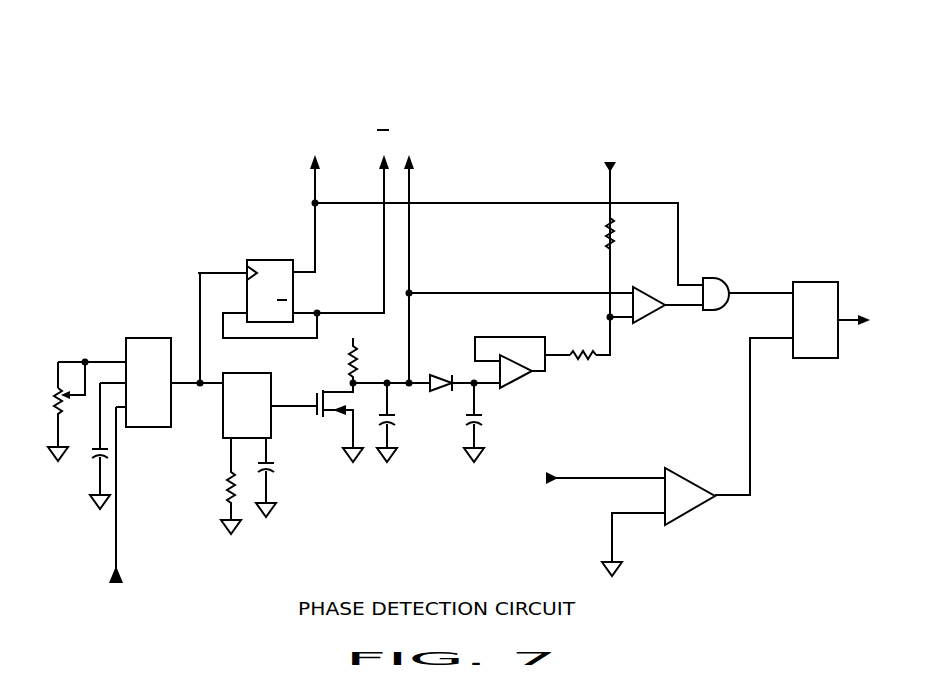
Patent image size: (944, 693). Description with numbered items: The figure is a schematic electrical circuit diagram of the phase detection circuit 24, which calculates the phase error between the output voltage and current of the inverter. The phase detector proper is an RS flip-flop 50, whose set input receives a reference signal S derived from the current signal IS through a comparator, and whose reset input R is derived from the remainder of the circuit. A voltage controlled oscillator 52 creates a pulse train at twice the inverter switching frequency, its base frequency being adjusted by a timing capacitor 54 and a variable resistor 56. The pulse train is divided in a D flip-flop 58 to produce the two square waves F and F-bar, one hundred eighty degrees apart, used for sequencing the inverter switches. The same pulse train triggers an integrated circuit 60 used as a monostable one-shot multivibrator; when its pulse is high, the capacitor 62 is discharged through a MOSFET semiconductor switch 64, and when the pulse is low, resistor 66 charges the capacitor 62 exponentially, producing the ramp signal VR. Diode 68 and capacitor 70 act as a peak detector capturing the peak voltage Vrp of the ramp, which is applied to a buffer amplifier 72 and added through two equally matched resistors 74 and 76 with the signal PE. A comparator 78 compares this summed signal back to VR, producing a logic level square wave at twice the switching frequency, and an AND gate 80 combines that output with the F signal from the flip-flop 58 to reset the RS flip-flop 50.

The phase detection circuit 24 is at (515, 111).
The RS flip-flop 50 is at (833, 282).
The voltage controlled oscillator 52 is at (162, 428).
The timing capacitor 54 is at (97, 461).
The variable resistor 56 is at (56, 398).
The D flip-flop 58 is at (295, 289).
The integrated circuit 60 is at (221, 413).
The capacitor 62 is at (390, 421).
The MOSFET semiconductor switch 64 is at (314, 402).
The resistor 66 is at (349, 371).
The diode 68 is at (447, 373).
The capacitor 70 is at (478, 423).
The buffer amplifier 72 is at (519, 366).
The resistor 74 is at (593, 353).
The resistor 76 is at (604, 222).
The comparator 78 is at (660, 271).
The AND gate 80 is at (707, 278).